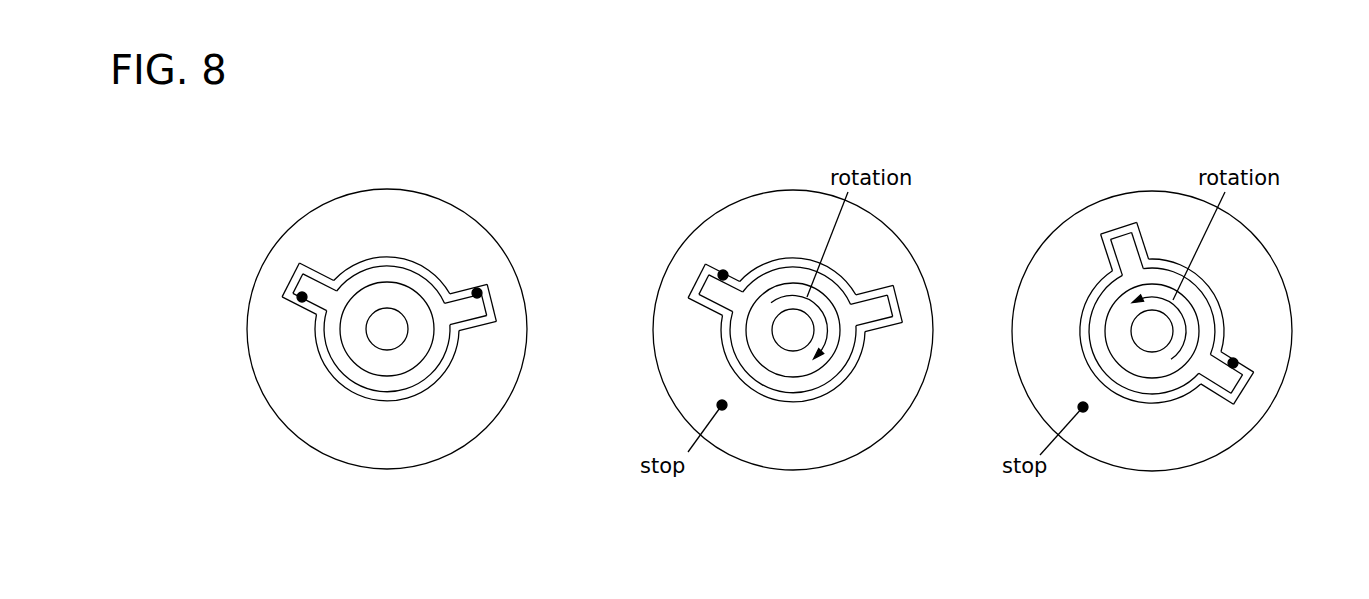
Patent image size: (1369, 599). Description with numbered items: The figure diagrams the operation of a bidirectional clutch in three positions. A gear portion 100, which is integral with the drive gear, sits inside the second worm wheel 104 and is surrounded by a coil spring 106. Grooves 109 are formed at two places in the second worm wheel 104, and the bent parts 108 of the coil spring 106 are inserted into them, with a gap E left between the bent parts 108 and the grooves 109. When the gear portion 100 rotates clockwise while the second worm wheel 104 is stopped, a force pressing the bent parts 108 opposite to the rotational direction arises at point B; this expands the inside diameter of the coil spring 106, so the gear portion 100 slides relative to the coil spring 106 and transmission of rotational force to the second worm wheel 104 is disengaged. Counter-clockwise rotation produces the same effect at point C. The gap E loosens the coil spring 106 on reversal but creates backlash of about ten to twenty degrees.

The gear portion 100 is at (367, 350).
The second worm wheel 104 is at (460, 400).
The coil spring 106 is at (413, 283).
The bent parts 108 is at (327, 285).
The grooves 109 is at (298, 265).
The gap E is at (302, 297).
The point B is at (723, 273).
The point C is at (1233, 363).